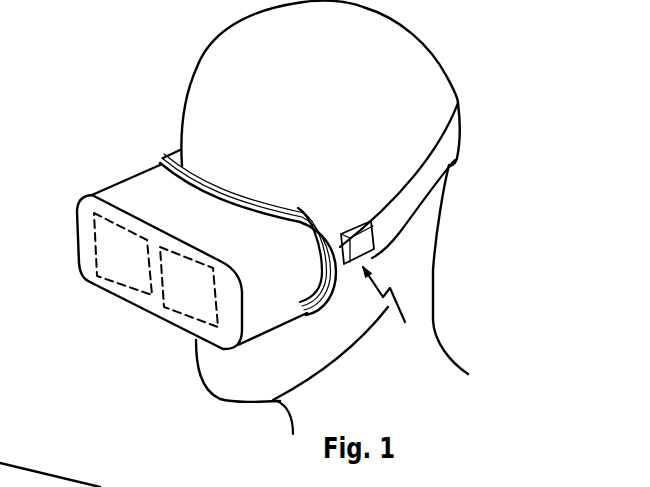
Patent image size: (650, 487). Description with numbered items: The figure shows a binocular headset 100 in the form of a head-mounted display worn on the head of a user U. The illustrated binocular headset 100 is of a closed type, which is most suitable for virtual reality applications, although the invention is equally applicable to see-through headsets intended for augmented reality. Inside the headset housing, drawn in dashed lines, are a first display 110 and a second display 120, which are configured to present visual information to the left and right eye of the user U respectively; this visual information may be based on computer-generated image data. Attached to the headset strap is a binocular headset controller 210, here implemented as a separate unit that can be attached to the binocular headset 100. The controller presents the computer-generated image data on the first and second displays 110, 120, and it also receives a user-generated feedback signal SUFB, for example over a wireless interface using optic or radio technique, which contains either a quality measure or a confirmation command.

The user U is at (180, 72).
The binocular headset 100 is at (138, 190).
The first display 110 is at (190, 297).
The second display 120 is at (113, 258).
The binocular headset controller 210 is at (363, 250).
The user-generated feedback signal SUFB is at (400, 309).